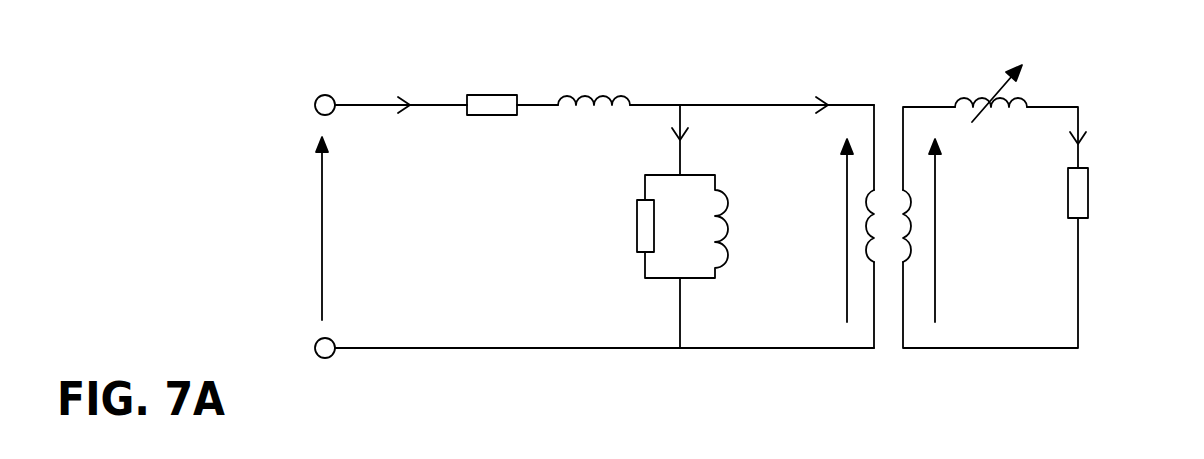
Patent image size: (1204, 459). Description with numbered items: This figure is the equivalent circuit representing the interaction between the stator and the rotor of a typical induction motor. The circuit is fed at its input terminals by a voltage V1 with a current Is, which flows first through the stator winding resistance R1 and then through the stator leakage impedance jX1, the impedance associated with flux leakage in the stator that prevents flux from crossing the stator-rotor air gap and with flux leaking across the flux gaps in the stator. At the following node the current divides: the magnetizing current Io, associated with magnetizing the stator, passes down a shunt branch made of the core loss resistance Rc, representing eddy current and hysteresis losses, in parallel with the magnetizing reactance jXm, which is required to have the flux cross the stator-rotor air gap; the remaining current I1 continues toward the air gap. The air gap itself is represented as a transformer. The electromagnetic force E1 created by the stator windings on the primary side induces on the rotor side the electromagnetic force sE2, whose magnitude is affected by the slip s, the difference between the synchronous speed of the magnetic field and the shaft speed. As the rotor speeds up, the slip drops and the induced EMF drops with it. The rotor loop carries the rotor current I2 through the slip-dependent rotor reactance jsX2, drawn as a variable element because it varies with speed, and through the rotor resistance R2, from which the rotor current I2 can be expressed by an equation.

The input voltage V1 is at (307, 228).
The source current Is is at (407, 129).
The stator winding resistance R1 is at (492, 81).
The stator leakage impedance jX1 is at (594, 76).
The magnetizing current Io is at (692, 144).
The primary current I1 = I'2 I1 is at (785, 91).
The core loss resistance Rc is at (638, 226).
The magnetizing reactance jXm is at (731, 226).
The stator electromagnetic force E1 is at (827, 230).
The slip-scaled rotor electromagnetic force sE2 is at (956, 230).
The slip-dependent rotor reactance jsX2 is at (979, 85).
The rotor current I2 is at (1091, 147).
The rotor resistance R2 is at (1104, 193).